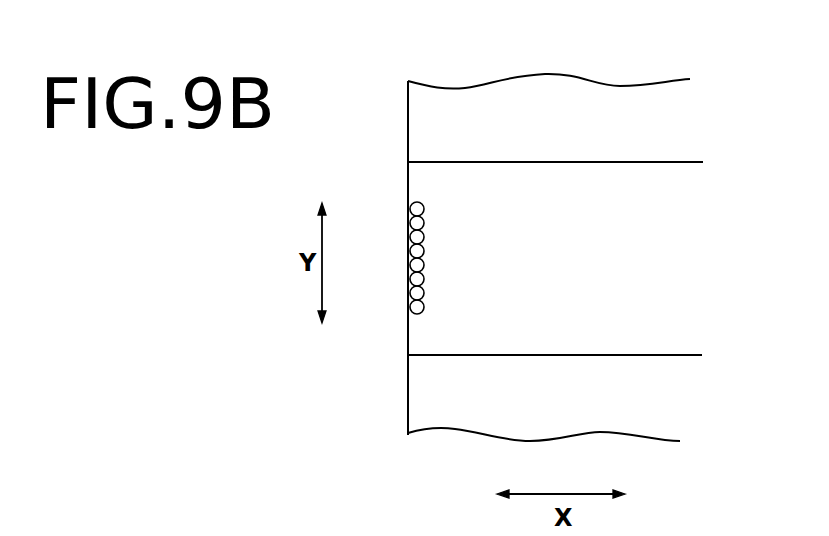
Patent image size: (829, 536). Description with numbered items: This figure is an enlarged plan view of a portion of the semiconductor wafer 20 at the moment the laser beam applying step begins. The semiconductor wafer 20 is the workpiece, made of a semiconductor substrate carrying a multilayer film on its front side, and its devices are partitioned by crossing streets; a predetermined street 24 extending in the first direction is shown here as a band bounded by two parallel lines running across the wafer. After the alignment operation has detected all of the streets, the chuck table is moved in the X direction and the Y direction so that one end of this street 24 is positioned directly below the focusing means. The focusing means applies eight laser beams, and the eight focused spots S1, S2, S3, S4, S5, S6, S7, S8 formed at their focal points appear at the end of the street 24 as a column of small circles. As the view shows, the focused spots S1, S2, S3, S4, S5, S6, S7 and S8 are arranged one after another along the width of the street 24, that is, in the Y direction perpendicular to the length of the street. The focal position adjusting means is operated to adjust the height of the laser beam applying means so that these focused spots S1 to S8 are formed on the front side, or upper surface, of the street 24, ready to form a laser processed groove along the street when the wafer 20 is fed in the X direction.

The semiconductor wafer 20 is at (626, 85).
The street 24 is at (673, 267).
The focused spot S1 is at (411, 208).
The focused spot S2 is at (421, 223).
The focused spot S3 is at (411, 238).
The focused spot S4 is at (421, 252).
The focused spot S5 is at (411, 267).
The focused spot S6 is at (421, 280).
The focused spot S7 is at (411, 295).
The focused spot S8 is at (421, 306).